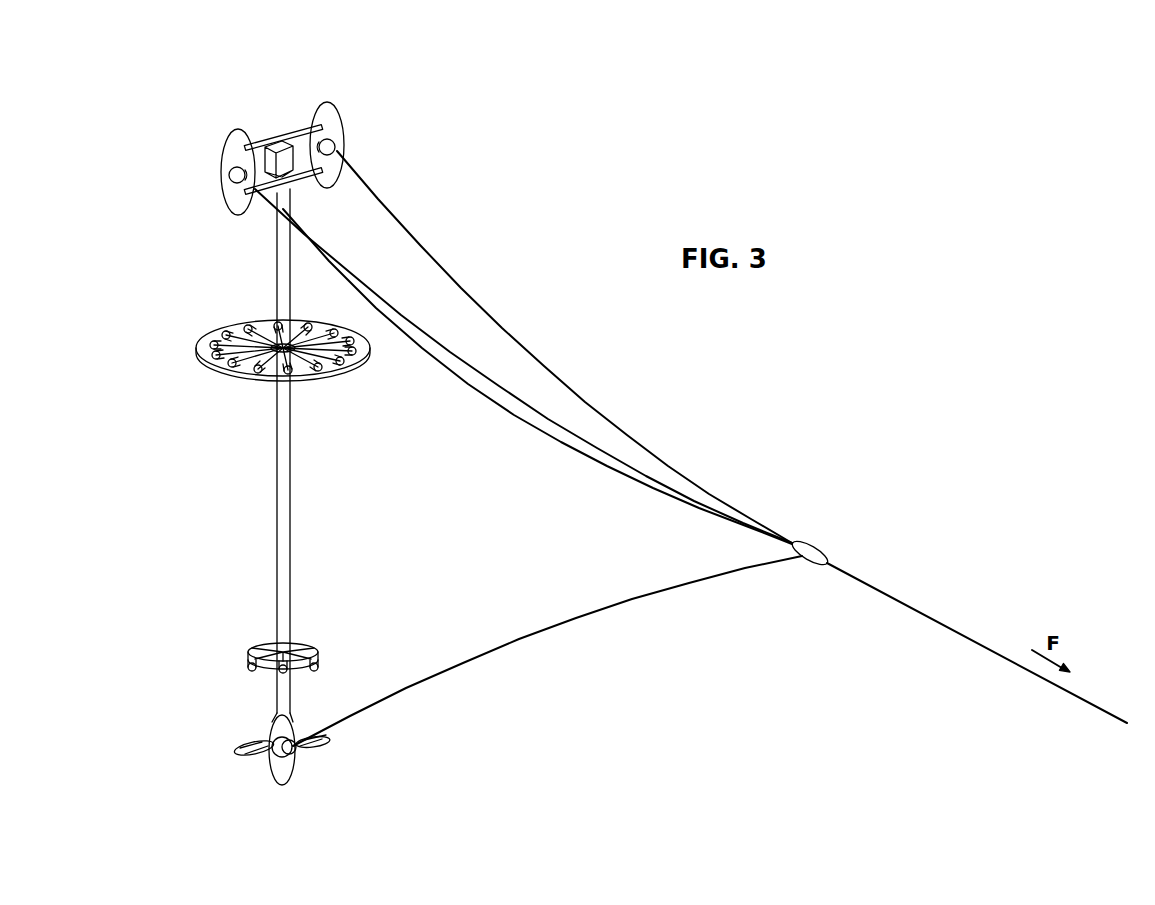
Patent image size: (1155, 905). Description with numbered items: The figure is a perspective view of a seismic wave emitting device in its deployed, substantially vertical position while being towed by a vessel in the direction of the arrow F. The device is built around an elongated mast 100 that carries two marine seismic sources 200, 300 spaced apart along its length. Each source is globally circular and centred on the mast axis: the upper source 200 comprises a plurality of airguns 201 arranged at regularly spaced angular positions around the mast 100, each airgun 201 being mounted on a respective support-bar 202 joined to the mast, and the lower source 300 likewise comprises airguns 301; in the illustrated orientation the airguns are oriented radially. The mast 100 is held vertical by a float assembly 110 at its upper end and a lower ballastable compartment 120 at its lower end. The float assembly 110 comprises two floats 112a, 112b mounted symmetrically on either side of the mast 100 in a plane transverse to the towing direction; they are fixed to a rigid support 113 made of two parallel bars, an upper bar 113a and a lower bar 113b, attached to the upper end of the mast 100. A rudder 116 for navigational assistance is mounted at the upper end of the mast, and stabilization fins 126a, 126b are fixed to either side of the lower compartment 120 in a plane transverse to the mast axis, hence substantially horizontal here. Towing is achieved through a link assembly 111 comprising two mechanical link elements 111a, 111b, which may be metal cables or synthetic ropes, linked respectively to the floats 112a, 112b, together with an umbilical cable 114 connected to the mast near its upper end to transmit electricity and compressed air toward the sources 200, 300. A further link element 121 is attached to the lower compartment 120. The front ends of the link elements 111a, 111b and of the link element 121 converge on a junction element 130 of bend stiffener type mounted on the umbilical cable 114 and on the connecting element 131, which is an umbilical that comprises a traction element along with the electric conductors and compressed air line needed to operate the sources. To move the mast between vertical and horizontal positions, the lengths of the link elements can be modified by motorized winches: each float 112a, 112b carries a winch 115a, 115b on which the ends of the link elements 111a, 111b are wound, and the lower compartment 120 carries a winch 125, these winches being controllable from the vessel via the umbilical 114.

The mast 100 is at (291, 528).
The float assembly 110 is at (312, 125).
The link assembly 111 is at (523, 347).
The mechanical link element 111a is at (489, 398).
The mechanical link element 111b is at (462, 287).
The float 112a is at (228, 143).
The float 112b is at (342, 125).
The rigid support 113 is at (294, 125).
The upper bar 113a is at (300, 125).
The lower bar 113b is at (312, 178).
The umbilical cable 114 is at (465, 362).
The winch 115a is at (232, 174).
The winch 115b is at (343, 148).
The rudder 116 is at (266, 138).
The lower ballastable compartment 120 is at (276, 763).
The link element 121 is at (517, 640).
The winch 125 is at (293, 755).
The stabilization fin 126a is at (253, 743).
The stabilization fin 126b is at (313, 745).
The junction element 130 is at (815, 548).
The connecting element 131 is at (952, 625).
The seismic source 200 is at (229, 376).
The airgun 201 is at (332, 378).
The support-bar 202 is at (242, 380).
The seismic source 300 is at (237, 631).
The airgun 301 is at (295, 645).